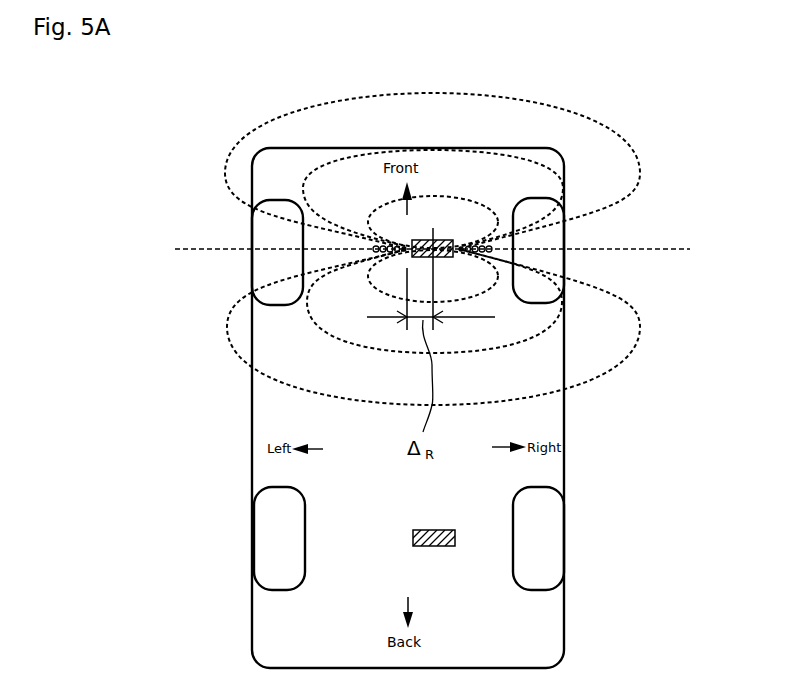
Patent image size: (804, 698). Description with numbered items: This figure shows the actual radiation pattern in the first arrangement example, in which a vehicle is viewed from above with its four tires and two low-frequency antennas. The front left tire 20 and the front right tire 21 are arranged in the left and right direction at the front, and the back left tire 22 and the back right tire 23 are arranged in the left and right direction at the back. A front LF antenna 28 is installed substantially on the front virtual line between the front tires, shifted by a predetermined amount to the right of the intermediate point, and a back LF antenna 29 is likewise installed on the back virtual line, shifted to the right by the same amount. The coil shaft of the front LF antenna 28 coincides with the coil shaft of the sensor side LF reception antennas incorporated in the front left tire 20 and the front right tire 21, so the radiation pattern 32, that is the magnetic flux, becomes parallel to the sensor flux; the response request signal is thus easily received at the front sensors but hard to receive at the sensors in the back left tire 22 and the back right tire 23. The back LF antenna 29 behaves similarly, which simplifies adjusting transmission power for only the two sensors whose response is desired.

The front left tire 20 is at (268, 236).
The front right tire 21 is at (540, 212).
The back left tire 22 is at (273, 538).
The back right tire 23 is at (550, 530).
The front LF antenna 28 is at (443, 238).
The back LF antenna 29 is at (432, 547).
The radiation pattern 32 is at (616, 133).